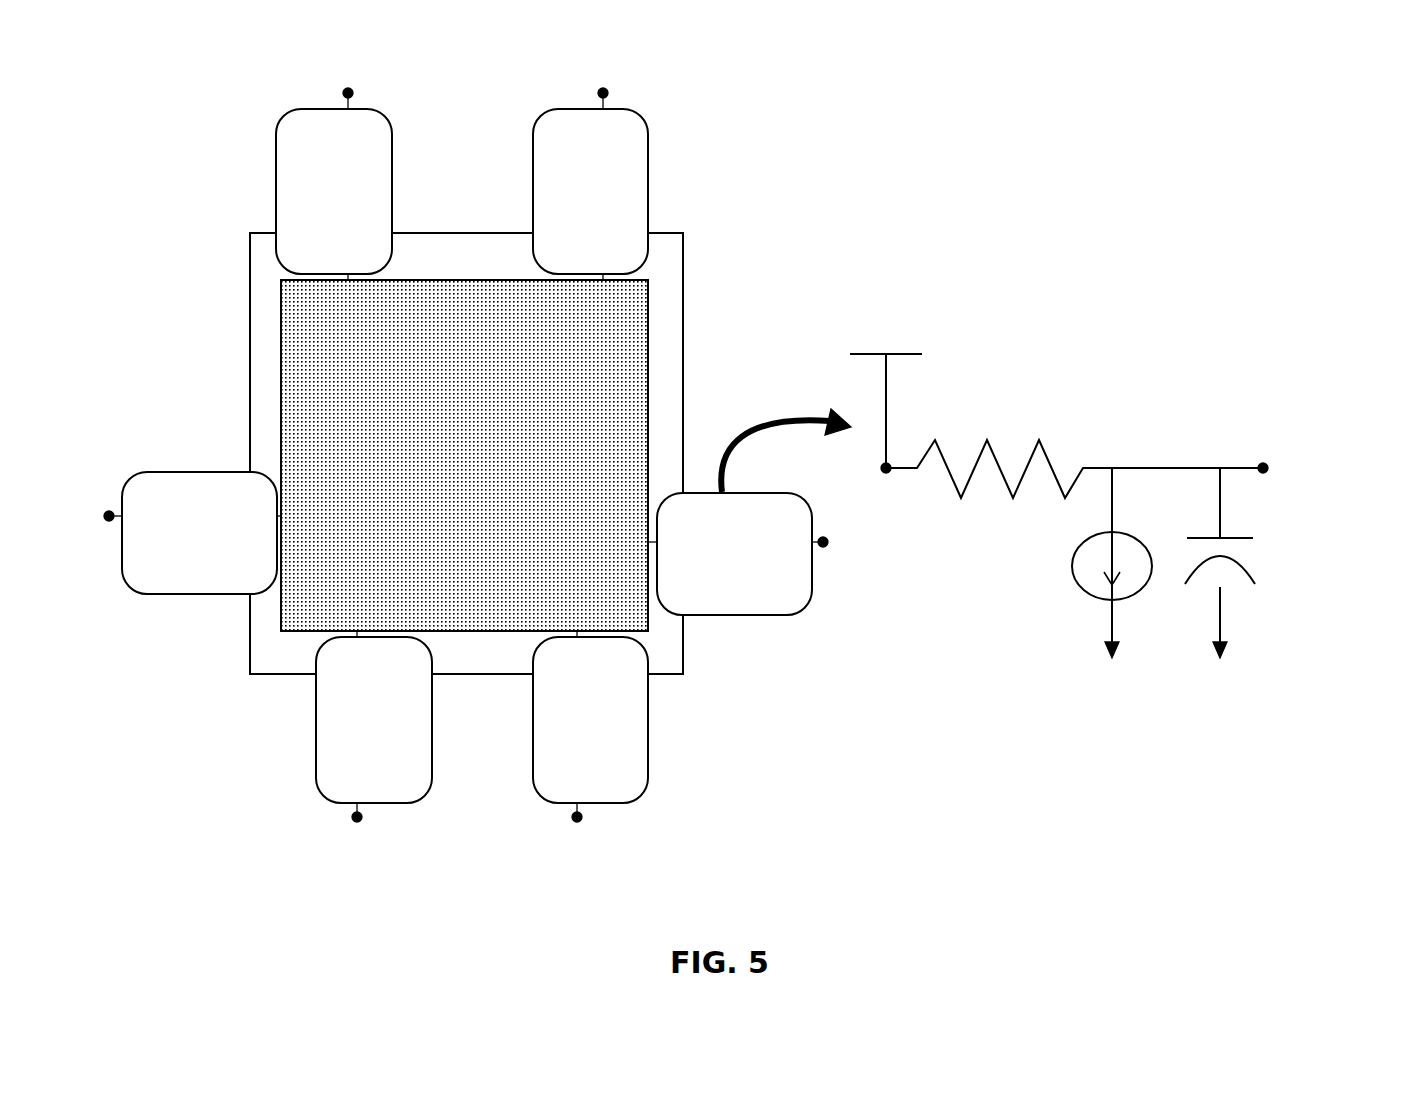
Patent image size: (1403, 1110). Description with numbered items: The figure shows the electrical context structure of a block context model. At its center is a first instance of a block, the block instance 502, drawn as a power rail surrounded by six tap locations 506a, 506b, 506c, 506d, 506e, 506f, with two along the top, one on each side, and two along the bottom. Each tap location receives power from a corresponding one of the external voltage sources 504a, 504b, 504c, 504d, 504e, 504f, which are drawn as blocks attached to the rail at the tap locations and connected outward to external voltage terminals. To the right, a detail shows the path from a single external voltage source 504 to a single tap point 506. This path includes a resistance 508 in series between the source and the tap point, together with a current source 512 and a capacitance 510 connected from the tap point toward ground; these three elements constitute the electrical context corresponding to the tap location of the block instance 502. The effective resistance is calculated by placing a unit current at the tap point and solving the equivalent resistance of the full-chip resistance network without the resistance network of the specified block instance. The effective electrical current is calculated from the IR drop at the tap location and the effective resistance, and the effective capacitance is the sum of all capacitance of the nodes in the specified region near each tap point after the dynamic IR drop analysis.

The block-instance-1 502 is at (483, 479).
The external voltage source 504 is at (916, 382).
The external voltage source 504a is at (332, 164).
The external voltage source 504b is at (580, 164).
The external voltage source 504c is at (774, 554).
The external voltage source 504d is at (601, 752).
The external voltage source 504e is at (348, 751).
The external voltage source 504f is at (161, 520).
The tap point 506 is at (1244, 451).
The tap location 506a is at (376, 311).
The tap location 506b is at (588, 311).
The tap location 506c is at (622, 523).
The tap location 506d is at (575, 600).
The tap location 506e is at (356, 600).
The tap location 506f is at (309, 504).
The resistance 508 is at (1004, 480).
The capacitance 510 is at (1220, 508).
The current source 512 is at (1112, 556).